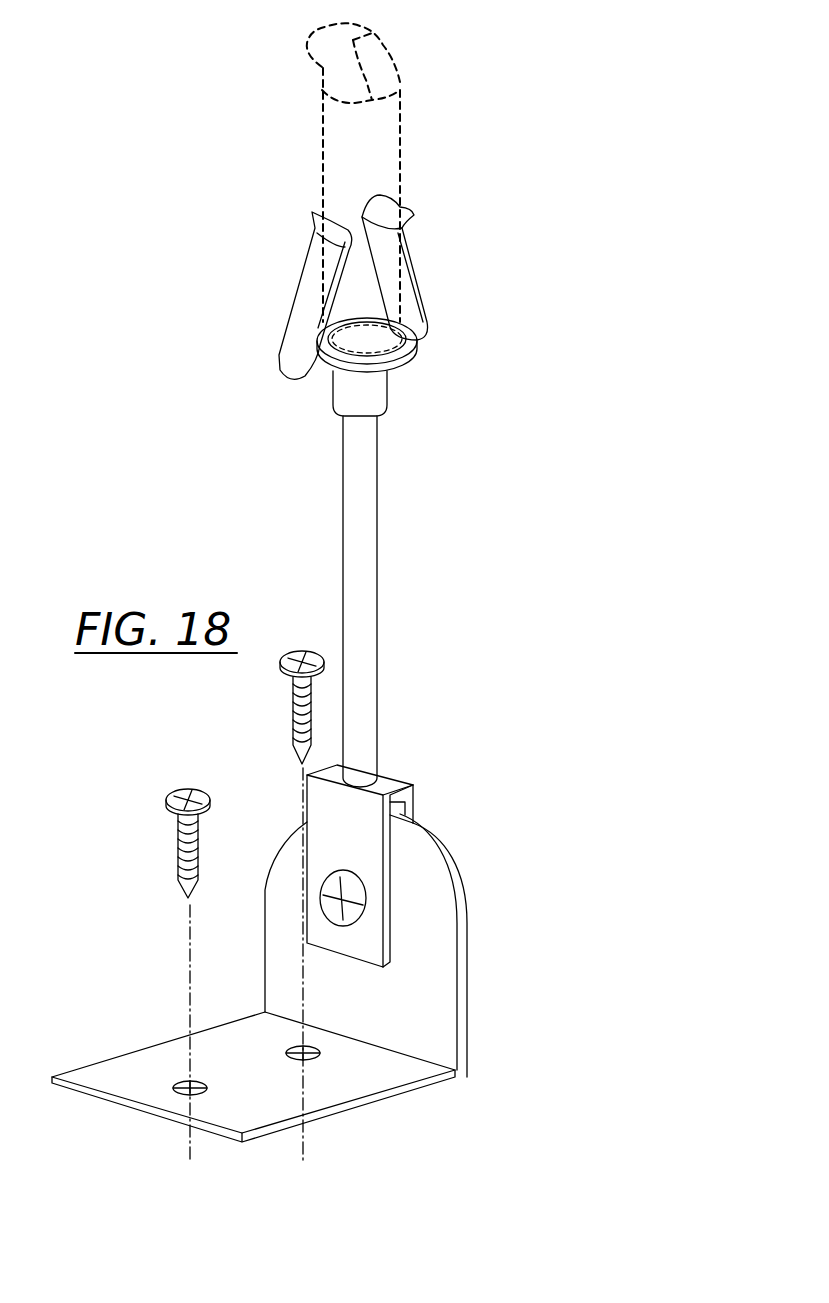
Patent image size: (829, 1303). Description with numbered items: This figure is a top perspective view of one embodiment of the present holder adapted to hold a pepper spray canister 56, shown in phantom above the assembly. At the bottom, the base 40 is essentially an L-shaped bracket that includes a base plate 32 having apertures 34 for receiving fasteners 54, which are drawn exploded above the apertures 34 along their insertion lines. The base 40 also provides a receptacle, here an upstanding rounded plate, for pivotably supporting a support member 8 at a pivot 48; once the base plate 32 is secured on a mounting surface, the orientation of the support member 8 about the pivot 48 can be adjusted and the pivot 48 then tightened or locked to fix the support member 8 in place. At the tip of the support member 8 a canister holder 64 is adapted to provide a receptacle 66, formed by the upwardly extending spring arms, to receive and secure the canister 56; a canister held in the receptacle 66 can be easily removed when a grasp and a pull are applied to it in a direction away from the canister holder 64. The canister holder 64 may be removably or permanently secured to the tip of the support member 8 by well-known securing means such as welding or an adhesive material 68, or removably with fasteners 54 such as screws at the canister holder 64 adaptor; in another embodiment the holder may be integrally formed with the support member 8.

The support member 8 is at (350, 601).
The base plate 32 is at (163, 1055).
The apertures 34 is at (173, 1088).
The base 40 is at (282, 943).
The pivot 48 is at (322, 890).
The fastener 54 is at (293, 735).
The pepper spray canister 56 is at (332, 125).
The canister holder adaptor 64 is at (235, 273).
The receptacle 66 is at (303, 300).
The adhesive material 68 is at (332, 395).